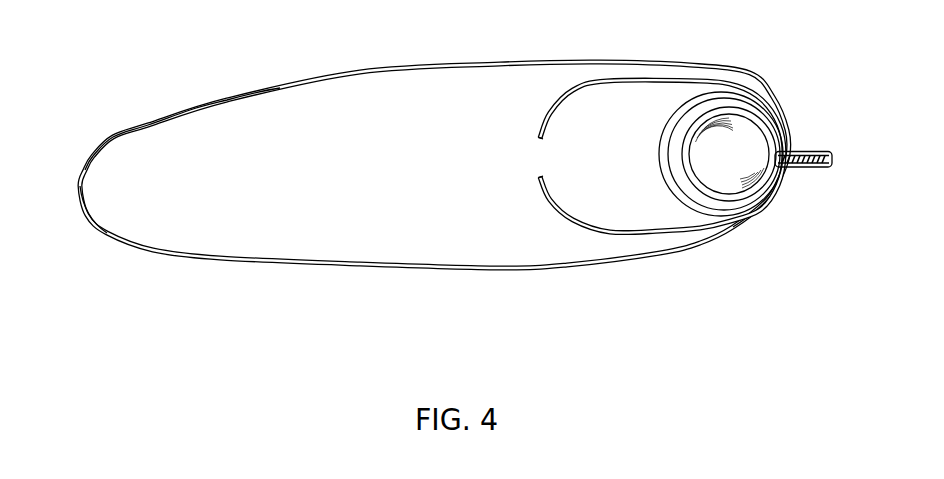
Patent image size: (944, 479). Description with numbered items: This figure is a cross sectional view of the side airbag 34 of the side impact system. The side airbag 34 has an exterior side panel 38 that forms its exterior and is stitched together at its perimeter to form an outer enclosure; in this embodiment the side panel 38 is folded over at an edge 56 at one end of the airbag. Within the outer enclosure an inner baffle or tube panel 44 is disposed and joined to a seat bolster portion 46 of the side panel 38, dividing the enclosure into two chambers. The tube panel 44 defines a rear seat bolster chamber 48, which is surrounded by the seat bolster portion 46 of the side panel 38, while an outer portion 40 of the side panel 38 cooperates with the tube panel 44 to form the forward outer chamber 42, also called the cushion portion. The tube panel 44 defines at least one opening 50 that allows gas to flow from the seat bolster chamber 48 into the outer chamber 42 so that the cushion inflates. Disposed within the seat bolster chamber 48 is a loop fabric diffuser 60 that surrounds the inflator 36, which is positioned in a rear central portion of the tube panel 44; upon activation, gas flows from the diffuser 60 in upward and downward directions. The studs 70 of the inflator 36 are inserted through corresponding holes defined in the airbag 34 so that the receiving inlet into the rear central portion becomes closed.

The side airbag 34 is at (418, 178).
The inflator 36 is at (752, 142).
The exterior side panel 38 is at (278, 78).
The outer portion 40 is at (148, 125).
The outer chamber 42 is at (233, 138).
The inner baffle or tube panel 44 is at (605, 117).
The seat bolster portion 46 is at (760, 213).
The seat bolster chamber 48 is at (632, 137).
The opening 50 is at (544, 165).
The edge 56 is at (82, 207).
The diffuser 60 is at (738, 99).
The studs 70 is at (801, 151).